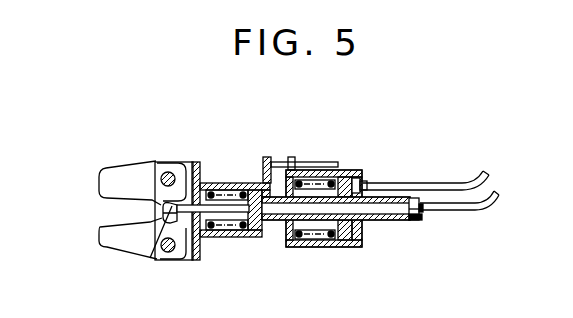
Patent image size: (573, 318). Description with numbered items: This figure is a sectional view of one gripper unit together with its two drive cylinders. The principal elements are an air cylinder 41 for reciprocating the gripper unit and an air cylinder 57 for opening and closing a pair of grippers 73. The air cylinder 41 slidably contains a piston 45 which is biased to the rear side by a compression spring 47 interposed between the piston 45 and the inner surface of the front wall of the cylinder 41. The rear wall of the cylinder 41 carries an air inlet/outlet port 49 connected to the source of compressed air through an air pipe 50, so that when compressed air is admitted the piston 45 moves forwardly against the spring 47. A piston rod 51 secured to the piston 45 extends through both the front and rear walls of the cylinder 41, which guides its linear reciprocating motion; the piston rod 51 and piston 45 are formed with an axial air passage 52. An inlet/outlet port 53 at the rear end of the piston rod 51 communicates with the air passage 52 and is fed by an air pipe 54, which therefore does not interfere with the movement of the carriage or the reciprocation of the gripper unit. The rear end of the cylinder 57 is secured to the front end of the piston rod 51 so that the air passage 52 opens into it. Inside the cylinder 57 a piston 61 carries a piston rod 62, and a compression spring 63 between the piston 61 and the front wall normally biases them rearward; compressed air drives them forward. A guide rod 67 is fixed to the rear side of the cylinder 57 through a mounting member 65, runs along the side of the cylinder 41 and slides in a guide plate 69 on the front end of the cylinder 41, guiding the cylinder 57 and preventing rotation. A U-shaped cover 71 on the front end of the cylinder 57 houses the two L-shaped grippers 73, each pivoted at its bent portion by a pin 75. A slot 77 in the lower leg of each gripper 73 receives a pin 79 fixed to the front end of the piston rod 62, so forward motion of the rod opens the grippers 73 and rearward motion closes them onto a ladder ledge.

The air cylinder 41 is at (360, 248).
The piston 45 is at (393, 222).
The compression spring 47 is at (323, 240).
The air inlet/outlet port 49 is at (367, 182).
The air pipe 50 is at (452, 183).
The piston rod 51 is at (405, 226).
The axial air passage 52 is at (405, 220).
The inlet/outlet port 53 is at (423, 215).
The air pipe 54 is at (494, 194).
The air cylinder 57 is at (262, 232).
The piston 61 is at (238, 183).
The piston rod 62 is at (213, 233).
The compression spring 63 is at (238, 233).
The mounting member 65 is at (266, 157).
The guide rod 67 is at (327, 162).
The guide plate 69 is at (291, 157).
The U-shaped cover 71 is at (185, 162).
The grippers 73 is at (104, 178).
The pin 75 is at (168, 172).
The slot 77 is at (153, 254).
The pin 79 is at (163, 210).